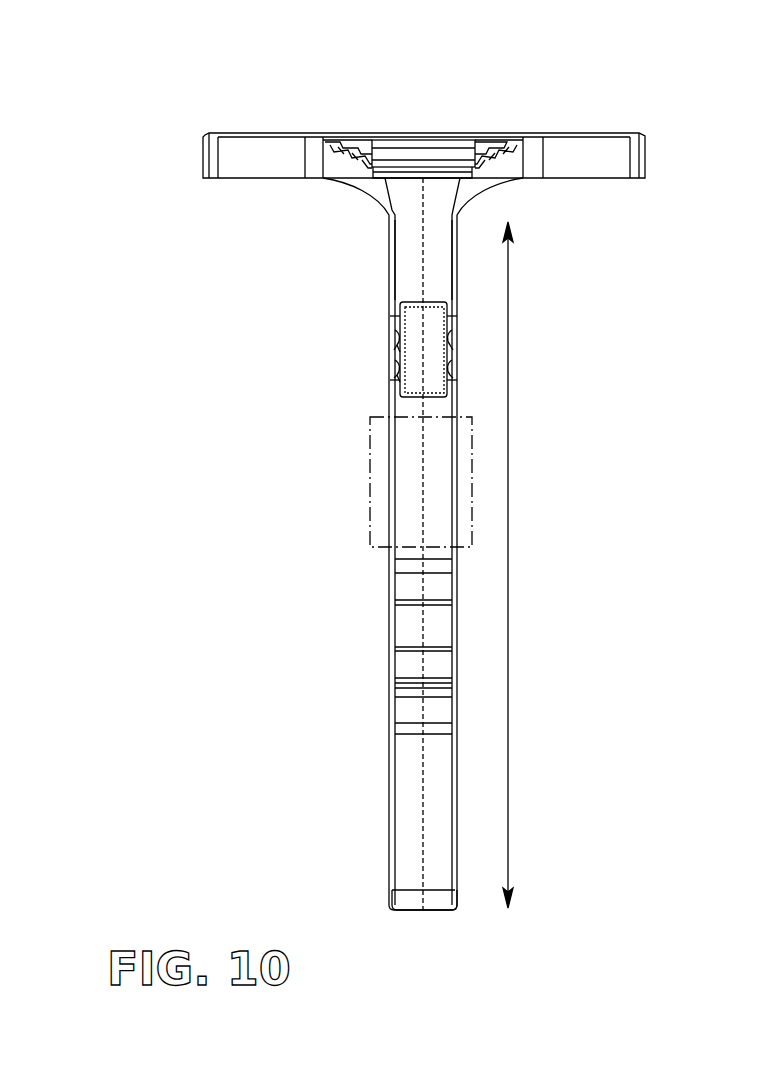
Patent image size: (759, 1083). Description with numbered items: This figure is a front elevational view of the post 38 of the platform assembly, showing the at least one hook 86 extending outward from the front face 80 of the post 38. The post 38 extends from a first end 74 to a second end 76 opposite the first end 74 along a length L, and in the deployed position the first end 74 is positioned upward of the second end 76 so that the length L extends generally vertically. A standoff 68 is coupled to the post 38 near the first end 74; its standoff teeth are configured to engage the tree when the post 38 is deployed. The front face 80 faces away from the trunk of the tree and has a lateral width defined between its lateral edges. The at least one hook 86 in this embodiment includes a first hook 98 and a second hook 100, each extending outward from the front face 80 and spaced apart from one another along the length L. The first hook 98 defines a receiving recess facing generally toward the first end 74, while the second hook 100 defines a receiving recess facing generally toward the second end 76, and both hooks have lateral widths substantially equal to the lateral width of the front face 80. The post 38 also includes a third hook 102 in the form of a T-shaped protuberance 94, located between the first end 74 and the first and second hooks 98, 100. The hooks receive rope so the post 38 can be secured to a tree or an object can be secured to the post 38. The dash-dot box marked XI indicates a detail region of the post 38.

The post 38 is at (389, 797).
The standoff 68 is at (622, 152).
The first end 74 is at (414, 178).
The second end 76 is at (436, 912).
The front face 80 is at (403, 253).
The at least one hook 86 is at (404, 355).
The T-shaped protuberance 94 is at (410, 375).
The first hook 98 is at (403, 713).
The second hook 100 is at (402, 610).
The third hook 102 is at (413, 317).
The length L is at (510, 553).
The detail view XI is at (370, 497).